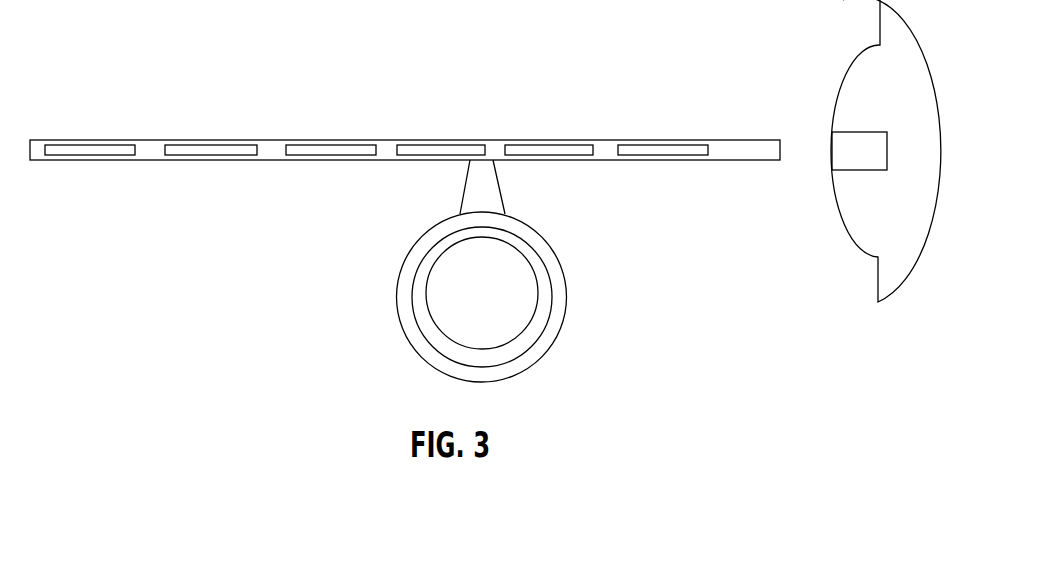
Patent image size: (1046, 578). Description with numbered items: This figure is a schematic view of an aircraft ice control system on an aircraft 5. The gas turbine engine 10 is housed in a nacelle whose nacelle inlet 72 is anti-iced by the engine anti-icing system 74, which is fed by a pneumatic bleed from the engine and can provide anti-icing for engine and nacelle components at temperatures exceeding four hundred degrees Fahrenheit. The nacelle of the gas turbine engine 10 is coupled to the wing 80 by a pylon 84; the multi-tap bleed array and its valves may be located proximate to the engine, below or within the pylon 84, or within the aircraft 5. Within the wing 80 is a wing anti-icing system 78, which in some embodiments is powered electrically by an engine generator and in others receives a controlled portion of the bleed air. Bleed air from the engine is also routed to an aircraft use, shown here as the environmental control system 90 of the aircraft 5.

The aircraft 5 is at (816, 129).
The gas turbine engine 10 is at (498, 307).
The nacelle inlet 72 is at (405, 313).
The engine anti-icing system 74 is at (539, 308).
The wing anti-icing system 78 is at (87, 139).
The wing 80 is at (148, 161).
The pylon 84 is at (496, 181).
The environmental control system 90 is at (853, 171).